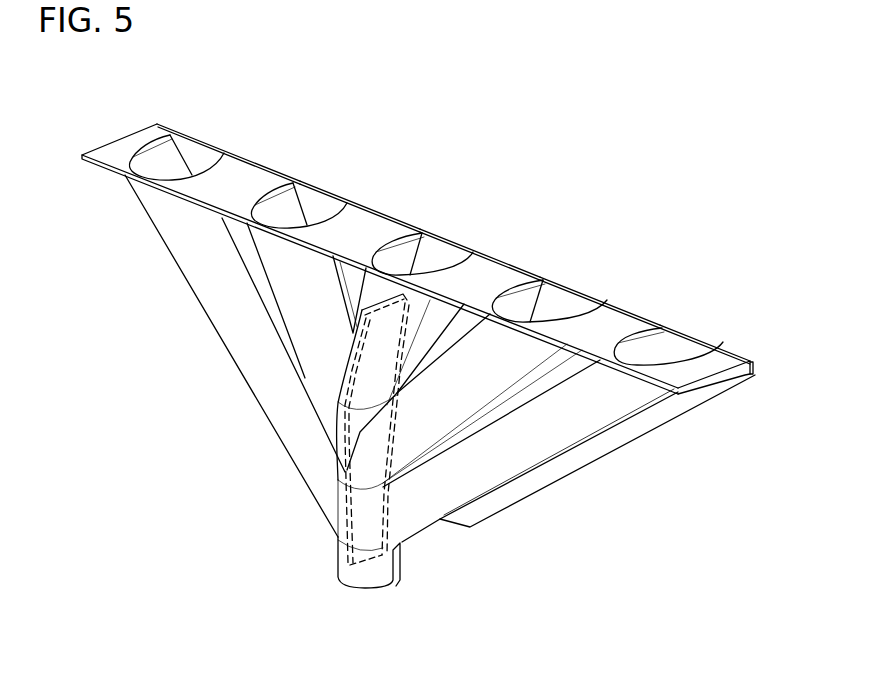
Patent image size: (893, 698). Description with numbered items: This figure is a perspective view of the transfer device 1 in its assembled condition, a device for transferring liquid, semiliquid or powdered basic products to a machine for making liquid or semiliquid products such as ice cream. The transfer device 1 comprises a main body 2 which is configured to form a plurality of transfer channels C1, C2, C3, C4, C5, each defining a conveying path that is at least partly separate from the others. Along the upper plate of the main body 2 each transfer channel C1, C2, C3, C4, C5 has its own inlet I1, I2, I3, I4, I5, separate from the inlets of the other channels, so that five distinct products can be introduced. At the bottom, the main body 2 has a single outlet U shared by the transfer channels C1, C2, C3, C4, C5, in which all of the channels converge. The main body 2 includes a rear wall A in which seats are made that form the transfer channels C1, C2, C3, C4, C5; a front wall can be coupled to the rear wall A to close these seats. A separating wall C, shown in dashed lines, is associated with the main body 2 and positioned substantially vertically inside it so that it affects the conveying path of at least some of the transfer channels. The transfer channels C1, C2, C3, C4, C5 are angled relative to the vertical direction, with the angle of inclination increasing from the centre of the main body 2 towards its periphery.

The transfer device 1 is at (627, 501).
The main body 2 is at (268, 428).
The rear wall A is at (220, 346).
The separating wall C is at (377, 343).
The transfer channel C1 is at (179, 118).
The transfer channel C2 is at (310, 155).
The transfer channel C3 is at (441, 198).
The transfer channel C4 is at (554, 246).
The transfer channel C5 is at (668, 291).
The inlet I1 is at (238, 148).
The inlet I2 is at (352, 198).
The inlet I3 is at (478, 250).
The inlet I4 is at (595, 294).
The inlet I5 is at (720, 343).
The outlet U is at (354, 592).